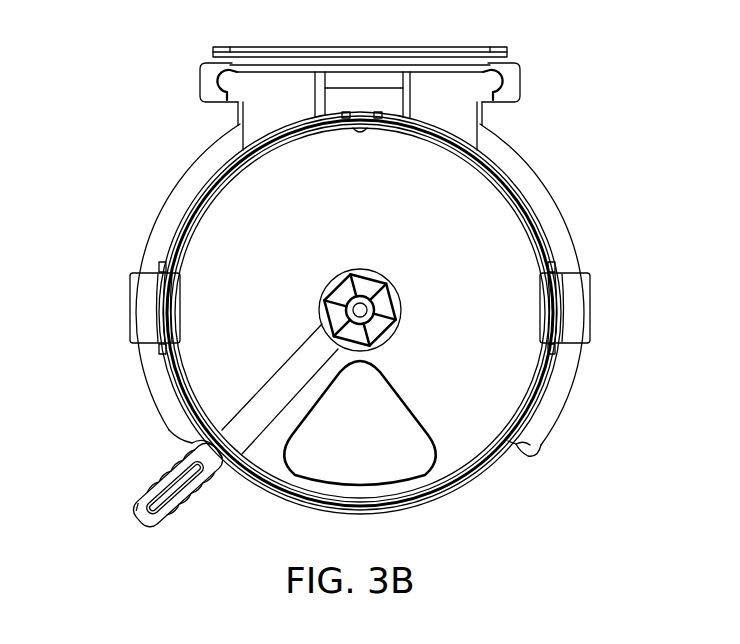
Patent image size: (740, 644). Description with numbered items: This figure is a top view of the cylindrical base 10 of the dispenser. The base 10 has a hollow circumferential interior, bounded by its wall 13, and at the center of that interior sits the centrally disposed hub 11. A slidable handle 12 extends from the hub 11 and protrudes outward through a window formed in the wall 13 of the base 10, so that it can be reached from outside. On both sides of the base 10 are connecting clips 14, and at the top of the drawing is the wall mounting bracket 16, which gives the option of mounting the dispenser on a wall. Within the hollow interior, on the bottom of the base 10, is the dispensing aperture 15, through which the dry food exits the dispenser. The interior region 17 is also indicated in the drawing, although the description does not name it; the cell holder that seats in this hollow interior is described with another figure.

The cylindrical base 10 is at (124, 124).
The hub 11 is at (357, 303).
The slidable handle 12 is at (156, 488).
The wall 13 is at (483, 474).
The connecting clips 14 is at (592, 310).
The dispensing aperture 15 is at (383, 453).
The wall mounting bracket 16 is at (521, 82).
The inner wall 17 is at (490, 247).